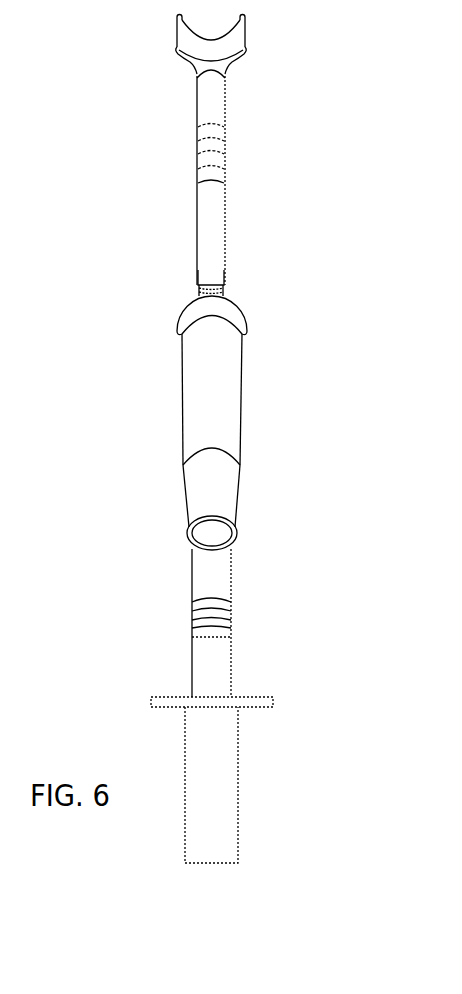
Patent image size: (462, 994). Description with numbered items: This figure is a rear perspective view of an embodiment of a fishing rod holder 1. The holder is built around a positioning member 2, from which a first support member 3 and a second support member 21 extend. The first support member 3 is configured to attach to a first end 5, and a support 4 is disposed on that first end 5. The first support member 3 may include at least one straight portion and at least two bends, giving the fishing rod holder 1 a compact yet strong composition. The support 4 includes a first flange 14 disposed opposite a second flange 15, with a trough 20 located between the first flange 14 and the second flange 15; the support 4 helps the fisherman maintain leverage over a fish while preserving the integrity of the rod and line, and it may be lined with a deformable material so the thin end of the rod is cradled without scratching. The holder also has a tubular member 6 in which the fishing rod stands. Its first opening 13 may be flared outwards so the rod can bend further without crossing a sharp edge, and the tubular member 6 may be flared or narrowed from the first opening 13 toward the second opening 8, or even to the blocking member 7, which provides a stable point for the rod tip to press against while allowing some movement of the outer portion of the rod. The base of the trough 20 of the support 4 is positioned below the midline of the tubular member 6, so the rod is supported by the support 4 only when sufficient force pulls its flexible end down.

The fishing rod holder 1 is at (433, 58).
The positioning member 2 is at (240, 767).
The first support member 3 is at (221, 222).
The support 4 is at (204, 39).
The first end 5 is at (200, 105).
The tubular member 6 is at (235, 390).
The blocking member 7 is at (222, 442).
The second opening 8 is at (192, 456).
The first opening 13 is at (229, 302).
The first flange 14 is at (246, 21).
The second flange 15 is at (177, 21).
The trough 20 is at (217, 32).
The second support member 21 is at (228, 576).